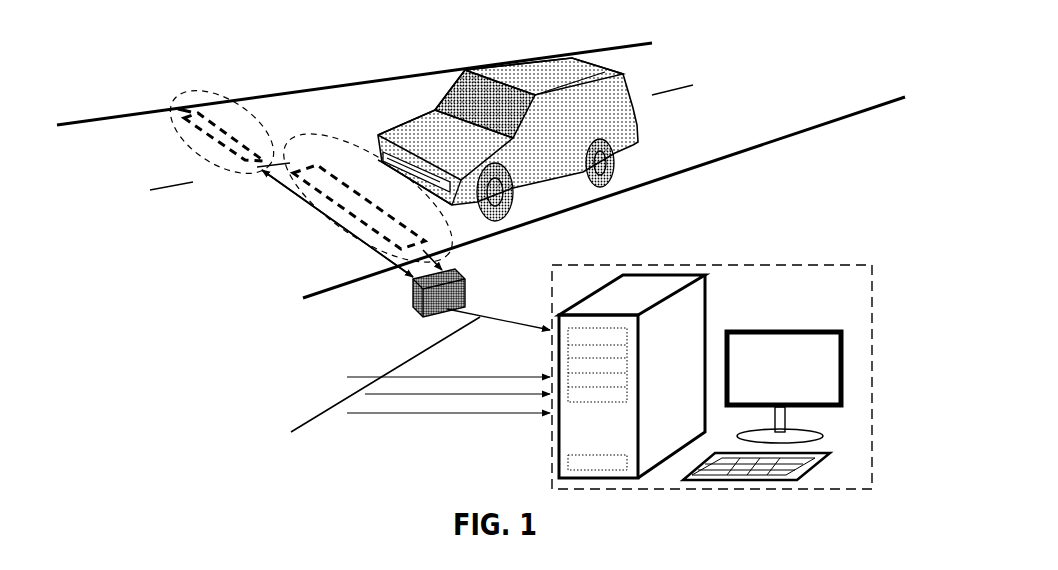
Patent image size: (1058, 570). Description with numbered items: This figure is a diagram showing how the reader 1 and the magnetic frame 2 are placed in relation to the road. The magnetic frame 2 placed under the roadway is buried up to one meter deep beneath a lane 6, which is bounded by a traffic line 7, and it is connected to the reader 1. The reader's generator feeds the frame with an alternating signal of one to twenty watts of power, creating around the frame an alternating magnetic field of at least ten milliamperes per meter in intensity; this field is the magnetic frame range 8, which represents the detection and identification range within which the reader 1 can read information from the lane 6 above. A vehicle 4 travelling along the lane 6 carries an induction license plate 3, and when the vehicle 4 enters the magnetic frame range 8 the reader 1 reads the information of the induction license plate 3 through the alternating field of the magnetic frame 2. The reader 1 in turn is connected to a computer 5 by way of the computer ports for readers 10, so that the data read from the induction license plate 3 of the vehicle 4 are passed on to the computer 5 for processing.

The reader 1 is at (413, 305).
The magnetic frame placed under the roadway 2 is at (362, 226).
The induction license plate 3 is at (313, 140).
The vehicle 4 is at (440, 108).
The computer 5 is at (712, 377).
The lane 6 is at (720, 133).
The traffic line 7 is at (742, 77).
The magnetic frame range 8 is at (316, 140).
The computer ports for readers 10 is at (367, 395).